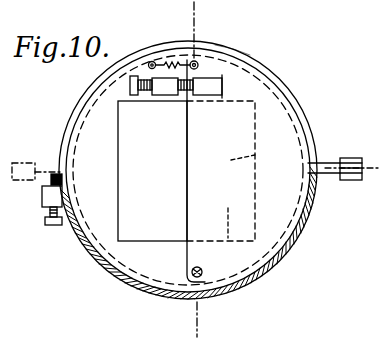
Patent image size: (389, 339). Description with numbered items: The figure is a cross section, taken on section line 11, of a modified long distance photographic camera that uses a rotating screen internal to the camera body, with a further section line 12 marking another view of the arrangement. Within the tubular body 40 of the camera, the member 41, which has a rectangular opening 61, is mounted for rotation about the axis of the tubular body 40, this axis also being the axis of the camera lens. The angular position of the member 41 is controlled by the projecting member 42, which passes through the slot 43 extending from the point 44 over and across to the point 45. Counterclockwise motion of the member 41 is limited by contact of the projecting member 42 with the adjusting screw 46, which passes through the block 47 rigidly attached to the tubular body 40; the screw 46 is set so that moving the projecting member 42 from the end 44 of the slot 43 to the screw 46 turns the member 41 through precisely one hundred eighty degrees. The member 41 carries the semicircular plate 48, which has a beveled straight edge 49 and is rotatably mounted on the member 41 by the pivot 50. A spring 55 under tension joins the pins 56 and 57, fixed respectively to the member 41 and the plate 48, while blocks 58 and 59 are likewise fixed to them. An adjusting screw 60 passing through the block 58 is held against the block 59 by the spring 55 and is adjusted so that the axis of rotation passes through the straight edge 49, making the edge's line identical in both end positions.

The section line 11 is at (203, 23).
The section line 12 is at (22, 163).
The tubular body 40 is at (297, 99).
The member 41 is at (188, 170).
The projecting member 42 is at (356, 181).
The slot 43 is at (213, 45).
The point 44 is at (308, 190).
The point 45 is at (65, 183).
The adjusting screw 46 is at (52, 228).
The block 47 is at (43, 199).
The semicircular plate 48 is at (235, 171).
The beveled straight edge 49 is at (197, 142).
The pivot 50 is at (248, 283).
The spring 55 is at (176, 58).
The pin 56 is at (148, 64).
The pin 57 is at (199, 63).
The block 58 is at (165, 92).
The block 59 is at (216, 86).
The adjusting screw 60 is at (132, 88).
The rectangular opening 61 is at (119, 190).